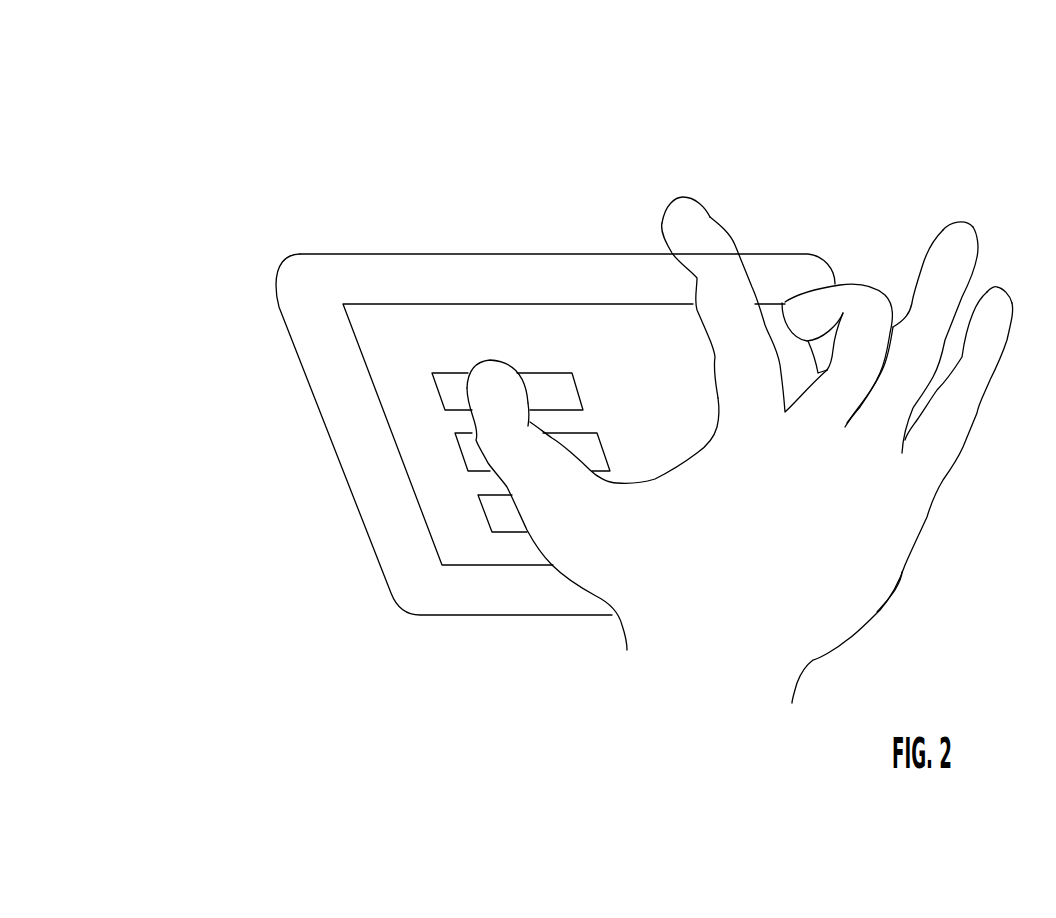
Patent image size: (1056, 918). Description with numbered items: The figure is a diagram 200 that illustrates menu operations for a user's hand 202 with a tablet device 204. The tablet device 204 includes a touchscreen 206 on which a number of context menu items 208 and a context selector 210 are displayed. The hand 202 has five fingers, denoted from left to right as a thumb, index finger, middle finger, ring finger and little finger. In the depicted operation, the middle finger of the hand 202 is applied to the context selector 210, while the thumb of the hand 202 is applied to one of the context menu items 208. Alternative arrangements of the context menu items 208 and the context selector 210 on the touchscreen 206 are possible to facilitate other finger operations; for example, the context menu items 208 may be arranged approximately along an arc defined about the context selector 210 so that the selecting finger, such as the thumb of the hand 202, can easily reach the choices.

The diagram 200 is at (343, 77).
The hand 202 is at (498, 720).
The tablet device 204 is at (362, 456).
The touchscreen 206 is at (367, 322).
The context menu items 208 is at (588, 448).
The context selector 210 is at (777, 305).